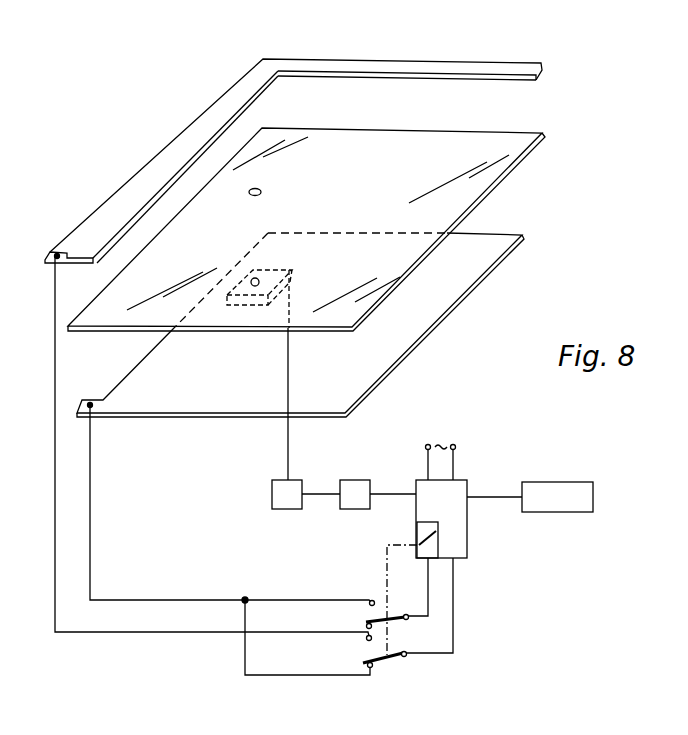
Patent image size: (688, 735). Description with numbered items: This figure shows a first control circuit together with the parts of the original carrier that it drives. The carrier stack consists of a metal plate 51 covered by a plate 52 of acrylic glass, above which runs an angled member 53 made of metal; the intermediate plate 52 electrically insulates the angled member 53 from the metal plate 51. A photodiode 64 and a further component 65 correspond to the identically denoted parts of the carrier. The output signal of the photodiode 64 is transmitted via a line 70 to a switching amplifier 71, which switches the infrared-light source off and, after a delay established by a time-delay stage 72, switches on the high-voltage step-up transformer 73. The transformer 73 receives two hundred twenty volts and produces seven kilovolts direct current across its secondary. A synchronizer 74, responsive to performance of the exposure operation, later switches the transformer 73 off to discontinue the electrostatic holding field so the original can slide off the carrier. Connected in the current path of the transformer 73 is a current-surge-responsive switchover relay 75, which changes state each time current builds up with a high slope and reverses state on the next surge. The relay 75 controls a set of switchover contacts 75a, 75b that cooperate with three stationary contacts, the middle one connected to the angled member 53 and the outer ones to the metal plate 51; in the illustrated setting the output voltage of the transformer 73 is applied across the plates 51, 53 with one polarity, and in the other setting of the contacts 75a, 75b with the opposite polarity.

The metal plate 51 is at (496, 237).
The plate of acrylic glass 52 is at (522, 137).
The angled member 53 is at (504, 67).
The photodiode 64 is at (250, 290).
The component corresponding to FIG. 6 65 is at (261, 189).
The line 70 is at (290, 451).
The switching amplifier 71 is at (272, 493).
The time-delay stage 72 is at (355, 480).
The high-voltage step-up transformer 73 is at (452, 490).
The synchronizer 74 is at (553, 490).
The current-surge-responsive switchover relay 75 is at (440, 545).
The switchover contact 75a is at (383, 618).
The switchover contact 75b is at (382, 660).